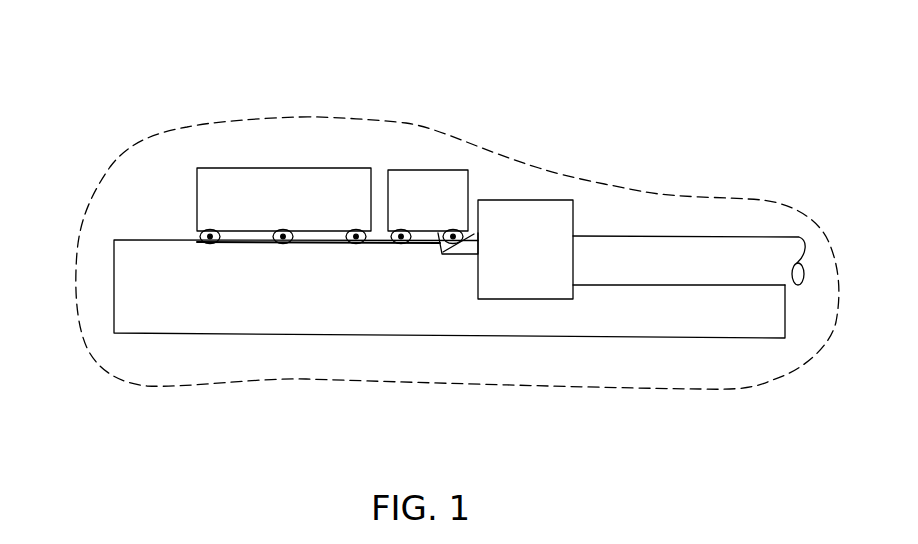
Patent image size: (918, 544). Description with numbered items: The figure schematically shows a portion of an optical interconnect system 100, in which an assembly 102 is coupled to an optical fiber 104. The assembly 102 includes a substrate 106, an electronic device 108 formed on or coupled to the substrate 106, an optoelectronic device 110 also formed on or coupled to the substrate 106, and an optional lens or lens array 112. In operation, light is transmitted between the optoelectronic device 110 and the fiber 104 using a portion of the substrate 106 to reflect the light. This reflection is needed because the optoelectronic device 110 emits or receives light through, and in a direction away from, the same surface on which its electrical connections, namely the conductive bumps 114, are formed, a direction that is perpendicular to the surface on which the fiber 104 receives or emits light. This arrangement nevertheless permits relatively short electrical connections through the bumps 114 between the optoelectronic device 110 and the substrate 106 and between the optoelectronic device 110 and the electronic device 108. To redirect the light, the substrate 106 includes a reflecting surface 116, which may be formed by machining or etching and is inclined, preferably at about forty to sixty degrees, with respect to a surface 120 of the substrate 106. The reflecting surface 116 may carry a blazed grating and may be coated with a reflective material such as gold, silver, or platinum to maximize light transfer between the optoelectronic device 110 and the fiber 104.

The system 100 is at (243, 79).
The assembly 102 is at (745, 390).
The optical fiber 104 is at (720, 245).
The substrate 106 is at (122, 310).
The electronic device 108 is at (288, 178).
The optoelectronic device 110 is at (423, 170).
The lens or lens array 112 is at (529, 200).
The conductive bumps 114 is at (455, 238).
The reflecting surface 116 is at (447, 252).
The surface of substrate 120 is at (150, 240).